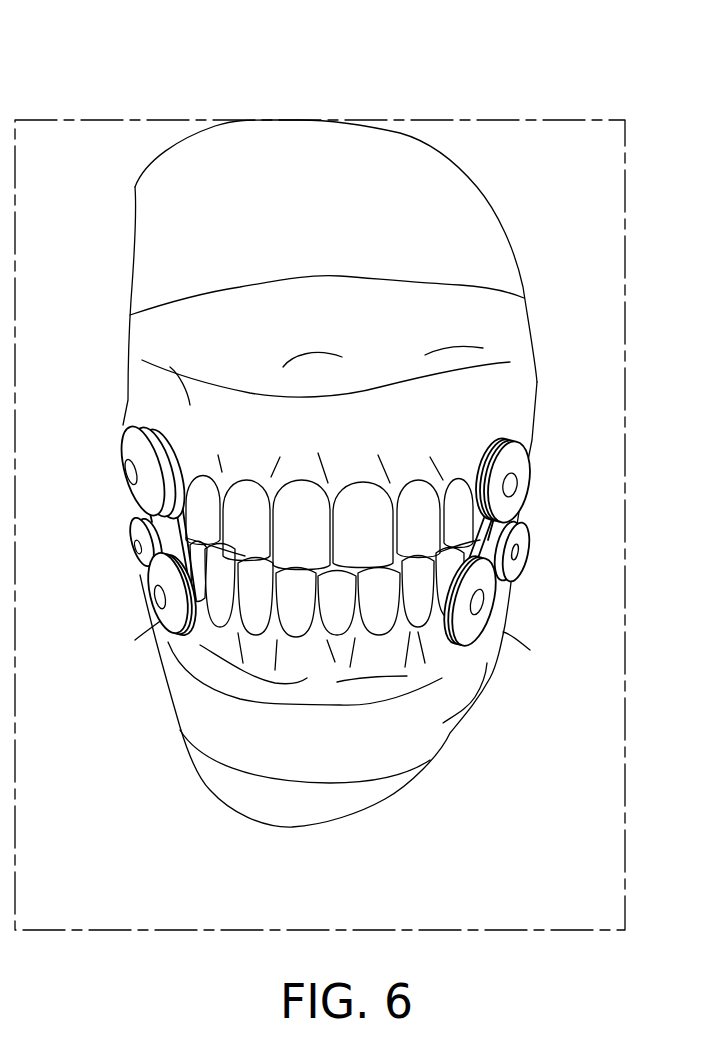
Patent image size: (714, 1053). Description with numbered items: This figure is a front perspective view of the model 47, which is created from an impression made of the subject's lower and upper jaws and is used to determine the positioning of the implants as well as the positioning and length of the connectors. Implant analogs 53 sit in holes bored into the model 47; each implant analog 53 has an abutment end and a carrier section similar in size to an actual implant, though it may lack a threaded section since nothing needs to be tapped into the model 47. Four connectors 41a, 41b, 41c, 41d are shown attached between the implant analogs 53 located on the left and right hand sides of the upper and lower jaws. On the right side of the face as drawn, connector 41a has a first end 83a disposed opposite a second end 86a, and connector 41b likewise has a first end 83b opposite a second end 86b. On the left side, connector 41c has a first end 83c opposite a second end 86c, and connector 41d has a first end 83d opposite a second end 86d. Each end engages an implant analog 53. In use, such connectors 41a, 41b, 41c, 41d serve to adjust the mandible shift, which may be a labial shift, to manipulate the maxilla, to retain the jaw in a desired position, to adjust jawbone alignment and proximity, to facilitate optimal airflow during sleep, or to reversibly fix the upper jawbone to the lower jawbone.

The model 47 is at (434, 85).
The first end 83a is at (498, 443).
The first end 83b is at (522, 452).
The first end 83c is at (152, 427).
The first end 83d is at (125, 438).
The implant analog 53 is at (130, 472).
The connector 41a is at (497, 562).
The connector 41b is at (506, 532).
The connector 41c is at (153, 553).
The connector 41d is at (137, 508).
The second end 86a is at (473, 627).
The second end 86b is at (478, 552).
The second end 86c is at (173, 623).
The second end 86d is at (135, 533).